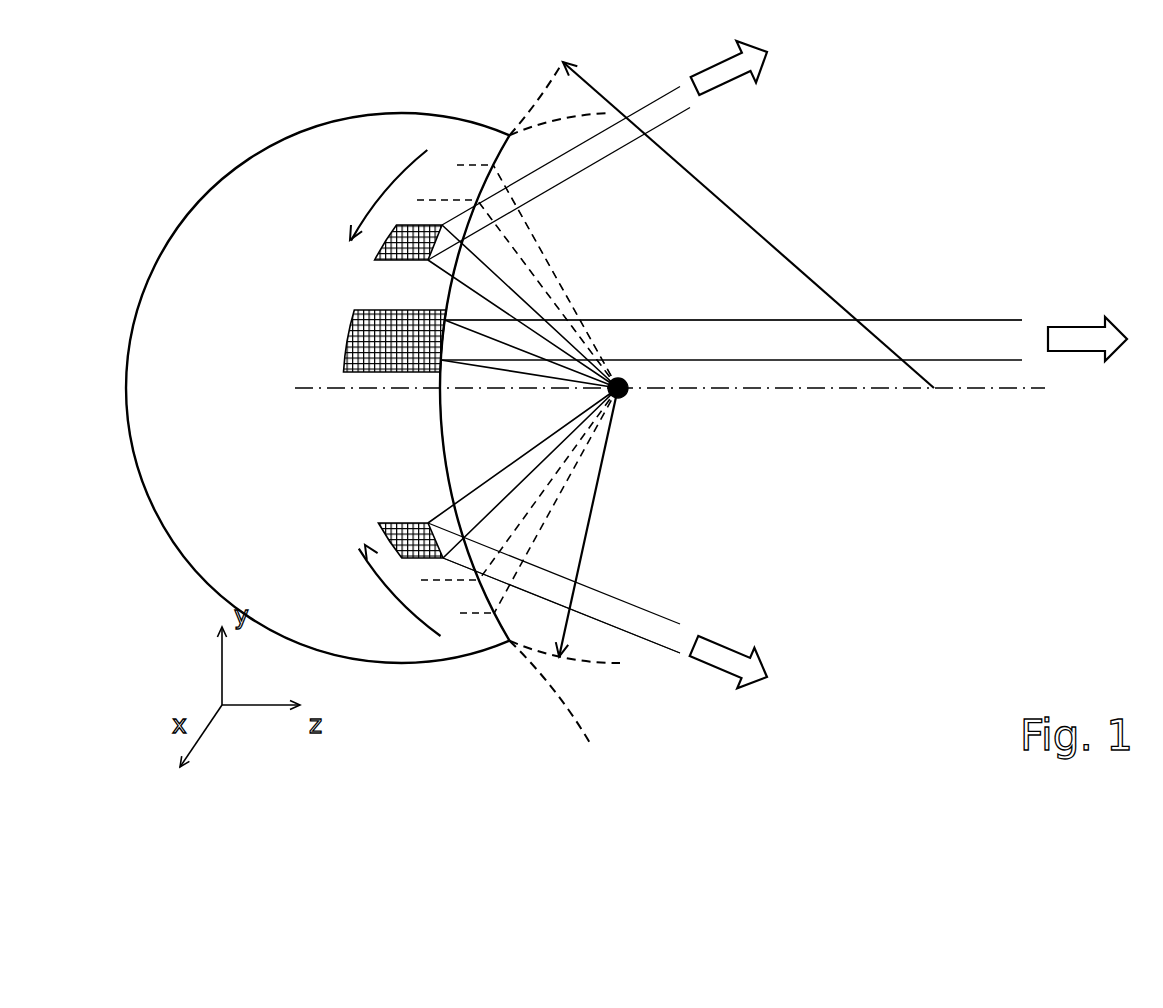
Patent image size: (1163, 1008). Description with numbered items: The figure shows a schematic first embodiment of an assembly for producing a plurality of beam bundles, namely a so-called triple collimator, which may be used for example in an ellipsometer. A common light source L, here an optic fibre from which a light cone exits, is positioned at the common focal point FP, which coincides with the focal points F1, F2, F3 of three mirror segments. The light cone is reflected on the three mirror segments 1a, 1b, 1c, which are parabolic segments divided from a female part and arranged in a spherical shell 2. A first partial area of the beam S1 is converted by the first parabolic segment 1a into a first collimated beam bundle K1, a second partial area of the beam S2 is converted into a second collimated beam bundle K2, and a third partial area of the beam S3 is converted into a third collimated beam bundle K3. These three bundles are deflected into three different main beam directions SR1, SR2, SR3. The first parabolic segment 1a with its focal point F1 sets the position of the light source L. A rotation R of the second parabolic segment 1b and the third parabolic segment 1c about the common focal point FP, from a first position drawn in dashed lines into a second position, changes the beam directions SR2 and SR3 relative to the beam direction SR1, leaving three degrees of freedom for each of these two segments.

The first parabolic segment 1a is at (347, 332).
The second parabolic segment 1b is at (385, 543).
The third parabolic segment 1c is at (378, 250).
The spherical shell 2 is at (317, 627).
The first partial area of the beam S1 is at (483, 370).
The second partial area of the beam S2 is at (513, 457).
The third partial area of the beam S3 is at (520, 287).
The first collimated beam bundle K1 is at (902, 308).
The second collimated beam bundle K2 is at (650, 672).
The third collimated beam bundle K3 is at (638, 102).
The first main beam direction SR1 is at (1070, 310).
The second main beam direction SR2 is at (747, 642).
The third main beam direction SR3 is at (713, 50).
The rotation R is at (395, 393).
The light source L is at (752, 432).
The focal point of the first parabolic segment F1 is at (752, 409).
The focal point of the second parabolic segment F2 is at (752, 409).
The focal point of the third parabolic segment F3 is at (752, 409).
The common focal point FP is at (635, 400).